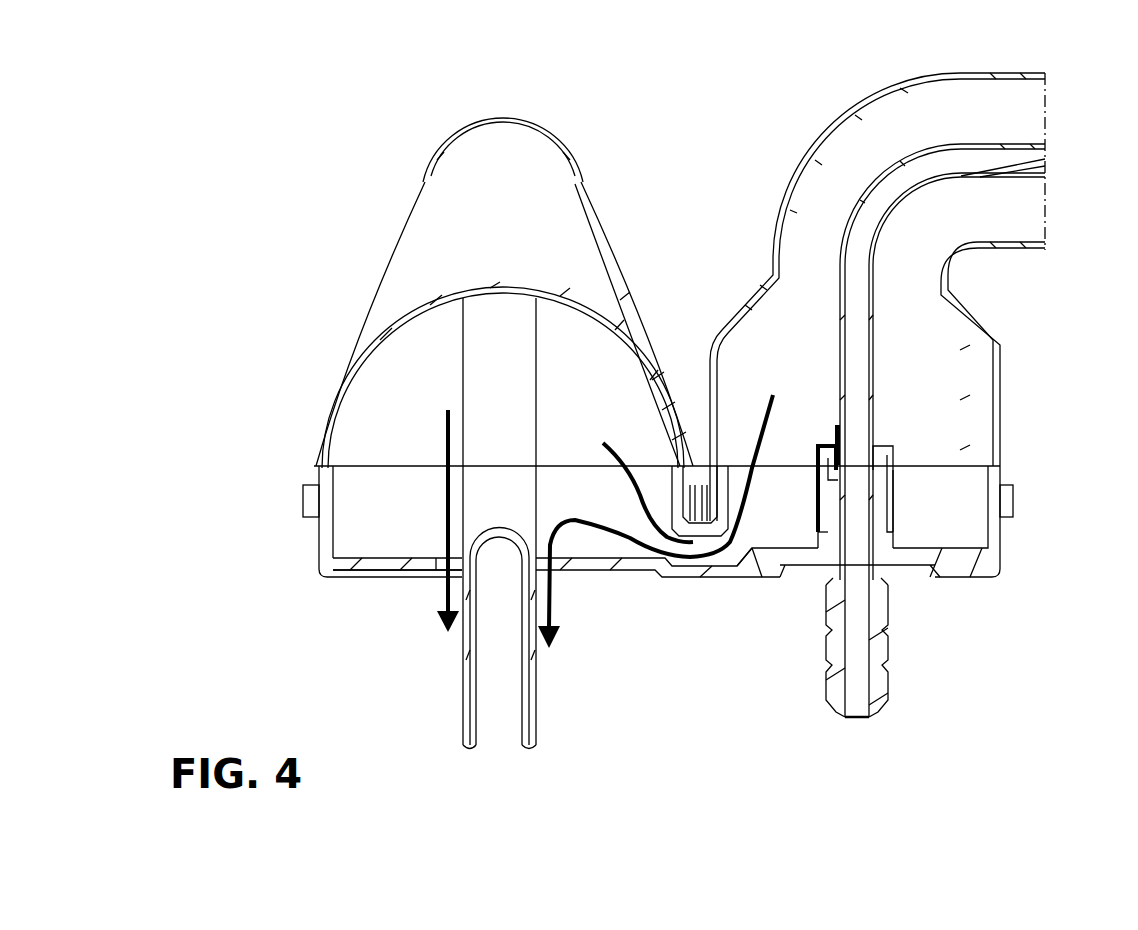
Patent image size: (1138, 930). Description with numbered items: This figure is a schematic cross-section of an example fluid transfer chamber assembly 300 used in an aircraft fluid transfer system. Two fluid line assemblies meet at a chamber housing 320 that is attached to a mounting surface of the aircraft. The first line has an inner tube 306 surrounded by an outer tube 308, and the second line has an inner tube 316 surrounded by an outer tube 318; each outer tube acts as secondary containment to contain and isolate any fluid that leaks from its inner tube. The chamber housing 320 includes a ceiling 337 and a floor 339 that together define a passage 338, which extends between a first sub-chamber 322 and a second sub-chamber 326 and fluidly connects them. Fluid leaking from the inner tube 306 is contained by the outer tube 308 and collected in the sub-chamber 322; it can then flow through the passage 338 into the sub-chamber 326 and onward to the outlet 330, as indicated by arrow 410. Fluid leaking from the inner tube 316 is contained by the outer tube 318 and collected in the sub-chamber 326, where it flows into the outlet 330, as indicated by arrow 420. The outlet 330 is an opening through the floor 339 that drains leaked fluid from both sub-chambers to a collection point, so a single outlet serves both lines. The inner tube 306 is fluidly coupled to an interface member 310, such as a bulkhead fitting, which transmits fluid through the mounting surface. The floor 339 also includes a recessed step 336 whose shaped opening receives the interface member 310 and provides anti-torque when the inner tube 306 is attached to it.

The fluid transfer chamber assembly 300 is at (258, 73).
The inner tube 306 is at (837, 277).
The outer tube 308 is at (827, 143).
The interface member 310 is at (918, 488).
The inner tube 316 is at (477, 400).
The outer tube 318 is at (410, 297).
The chamber housing 320 is at (320, 556).
The first sub-chamber 322 is at (972, 522).
The second sub-chamber 326 is at (350, 488).
The outlet 330 is at (440, 572).
The recessed step 336 is at (755, 598).
The ceiling 337 is at (631, 480).
The passage 338 is at (680, 580).
The floor 339 is at (736, 563).
The arrow 410 is at (772, 424).
The arrow 420 is at (445, 440).